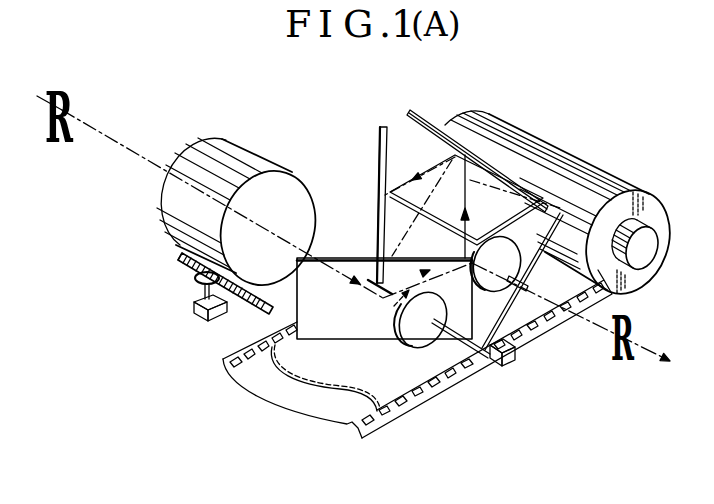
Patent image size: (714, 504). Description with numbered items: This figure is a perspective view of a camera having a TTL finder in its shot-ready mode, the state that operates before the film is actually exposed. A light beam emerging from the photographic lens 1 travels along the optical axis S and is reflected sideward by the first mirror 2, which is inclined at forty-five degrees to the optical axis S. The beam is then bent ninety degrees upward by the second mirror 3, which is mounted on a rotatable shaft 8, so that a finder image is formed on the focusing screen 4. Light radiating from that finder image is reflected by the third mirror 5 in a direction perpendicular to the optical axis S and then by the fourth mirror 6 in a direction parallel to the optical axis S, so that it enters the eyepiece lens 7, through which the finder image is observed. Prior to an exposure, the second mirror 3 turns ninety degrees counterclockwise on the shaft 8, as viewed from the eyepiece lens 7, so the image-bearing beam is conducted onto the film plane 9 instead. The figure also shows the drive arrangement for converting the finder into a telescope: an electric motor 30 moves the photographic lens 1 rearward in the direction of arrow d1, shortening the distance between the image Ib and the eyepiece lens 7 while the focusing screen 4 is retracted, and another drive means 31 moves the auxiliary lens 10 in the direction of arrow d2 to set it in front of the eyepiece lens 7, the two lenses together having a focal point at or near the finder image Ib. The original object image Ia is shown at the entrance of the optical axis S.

The photographic lens 1 is at (241, 152).
The first mirror 2 is at (330, 280).
The second mirror 3 is at (513, 353).
The focusing screen 4 is at (571, 194).
The third mirror 5 is at (430, 120).
The fourth mirror 6 is at (379, 160).
The eyepiece lens 7 is at (526, 293).
The rotatable shaft 8 is at (520, 292).
The film plane 9 is at (553, 312).
The auxiliary lens 10 is at (428, 346).
The electric motor 30 is at (196, 322).
The drive means 31 is at (501, 368).
The original image Ia is at (66, 91).
The finder image Ib is at (452, 190).
The optical axis S is at (99, 134).
The arrow d1 is at (188, 290).
The arrow d2 is at (391, 308).